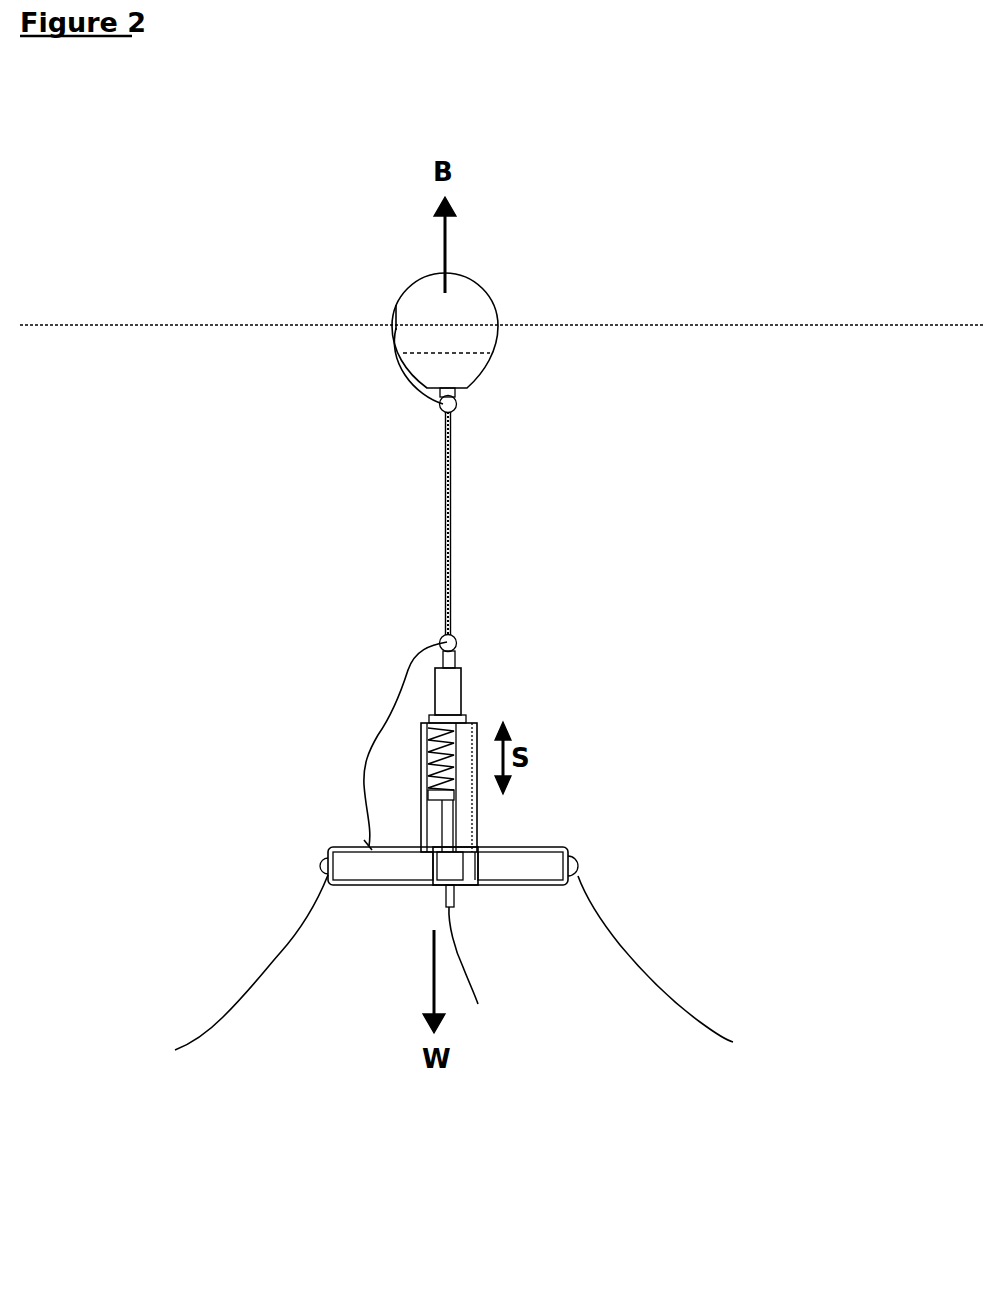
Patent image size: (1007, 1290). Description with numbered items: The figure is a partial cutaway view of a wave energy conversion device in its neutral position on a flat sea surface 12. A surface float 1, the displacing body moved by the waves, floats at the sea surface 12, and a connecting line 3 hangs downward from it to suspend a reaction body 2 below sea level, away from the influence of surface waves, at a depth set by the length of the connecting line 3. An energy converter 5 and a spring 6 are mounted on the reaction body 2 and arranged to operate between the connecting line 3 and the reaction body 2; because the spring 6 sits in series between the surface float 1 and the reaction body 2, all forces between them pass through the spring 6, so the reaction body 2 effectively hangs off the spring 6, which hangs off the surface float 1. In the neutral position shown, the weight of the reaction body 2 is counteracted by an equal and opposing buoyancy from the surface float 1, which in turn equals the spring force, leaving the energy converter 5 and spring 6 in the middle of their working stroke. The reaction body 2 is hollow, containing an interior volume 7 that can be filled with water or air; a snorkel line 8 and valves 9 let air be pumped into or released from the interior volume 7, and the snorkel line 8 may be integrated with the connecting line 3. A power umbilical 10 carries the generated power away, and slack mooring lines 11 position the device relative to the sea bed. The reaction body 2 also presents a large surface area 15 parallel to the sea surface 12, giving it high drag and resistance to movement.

The surface float 1 is at (511, 313).
The reaction body 2 is at (580, 765).
The connecting line 3 is at (555, 523).
The energy converter 5 is at (600, 850).
The spring 6 is at (326, 692).
The interior volume 7 is at (404, 981).
The snorkel line 8 is at (293, 587).
The valves 9 is at (256, 538).
The power umbilical 10 is at (537, 997).
The mooring lines 11 is at (261, 985).
The sea surface 12 is at (502, 380).
The surface area 15 is at (608, 969).